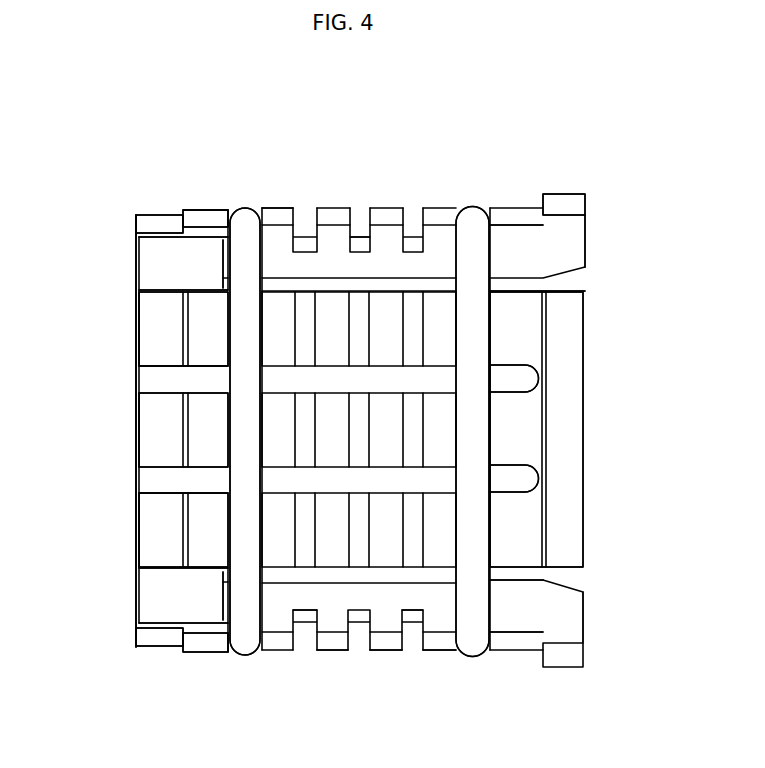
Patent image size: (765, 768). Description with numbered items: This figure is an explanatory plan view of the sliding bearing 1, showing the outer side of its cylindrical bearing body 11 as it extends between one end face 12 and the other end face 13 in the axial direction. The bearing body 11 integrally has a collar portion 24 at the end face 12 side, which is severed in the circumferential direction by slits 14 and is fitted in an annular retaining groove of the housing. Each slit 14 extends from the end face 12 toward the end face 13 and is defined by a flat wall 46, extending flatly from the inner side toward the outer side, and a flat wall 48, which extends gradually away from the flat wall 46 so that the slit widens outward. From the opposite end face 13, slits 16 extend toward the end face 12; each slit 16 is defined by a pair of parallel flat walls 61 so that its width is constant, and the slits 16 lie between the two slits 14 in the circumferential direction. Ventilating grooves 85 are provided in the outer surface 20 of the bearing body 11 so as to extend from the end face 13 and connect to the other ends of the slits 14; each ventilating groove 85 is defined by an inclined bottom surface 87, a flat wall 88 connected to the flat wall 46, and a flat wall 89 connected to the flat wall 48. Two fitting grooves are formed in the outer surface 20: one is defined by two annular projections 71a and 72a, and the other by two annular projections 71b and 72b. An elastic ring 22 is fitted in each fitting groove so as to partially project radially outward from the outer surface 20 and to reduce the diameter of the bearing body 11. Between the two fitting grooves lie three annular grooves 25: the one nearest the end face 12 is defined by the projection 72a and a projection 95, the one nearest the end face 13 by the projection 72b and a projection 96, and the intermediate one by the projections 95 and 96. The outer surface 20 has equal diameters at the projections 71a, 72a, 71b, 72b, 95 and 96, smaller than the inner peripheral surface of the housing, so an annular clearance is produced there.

The sliding bearing 1 is at (122, 236).
The flat wall 89 is at (147, 217).
The outer surface 20 is at (168, 212).
The annular projection 71b is at (207, 217).
The elastic ring 22 is at (245, 215).
The annular projection 72b is at (282, 215).
The annular groove 25 is at (360, 235).
The slit 14 is at (512, 240).
The collar portion 24 is at (563, 205).
The ventilating groove 85 is at (162, 252).
The inclined bottom surface 87 is at (162, 265).
The flat wall 88 is at (160, 288).
The flat wall 48 is at (568, 248).
The flat wall 46 is at (563, 288).
The flat wall 61 is at (155, 366).
The slit 16 is at (155, 380).
The other end face 13 is at (132, 433).
The one end face 12 is at (585, 410).
The annular projection 71a is at (527, 445).
The bearing body 11 is at (212, 654).
The projection 96 is at (335, 648).
The projection 95 is at (380, 652).
The annular projection 72a is at (442, 645).